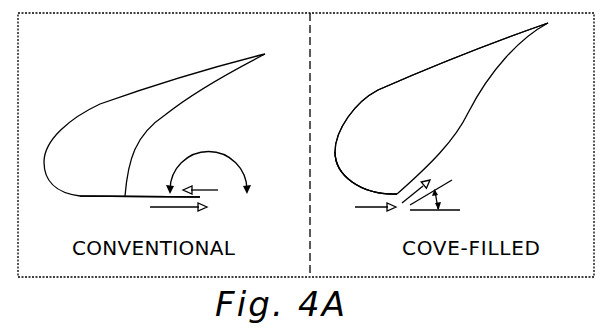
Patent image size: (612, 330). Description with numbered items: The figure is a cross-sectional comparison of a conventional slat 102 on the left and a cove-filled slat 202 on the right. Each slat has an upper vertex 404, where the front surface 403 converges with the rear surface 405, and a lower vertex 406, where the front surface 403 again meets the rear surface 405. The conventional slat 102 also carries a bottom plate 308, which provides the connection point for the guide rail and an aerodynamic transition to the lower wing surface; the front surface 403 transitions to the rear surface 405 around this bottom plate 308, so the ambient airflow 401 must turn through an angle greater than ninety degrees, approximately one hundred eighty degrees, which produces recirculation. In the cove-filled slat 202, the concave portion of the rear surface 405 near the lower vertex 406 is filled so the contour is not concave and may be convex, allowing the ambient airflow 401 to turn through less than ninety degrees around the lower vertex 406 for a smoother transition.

The conventional slat 102 is at (110, 62).
The cove-filled slat 202 is at (392, 52).
The bottom plate 308 is at (145, 198).
The ambient airflow 401 is at (273, 217).
The front surface 403 is at (99, 105).
The upper vertex 404 is at (275, 54).
The rear surface 405 is at (150, 124).
The lower vertex 406 is at (212, 193).